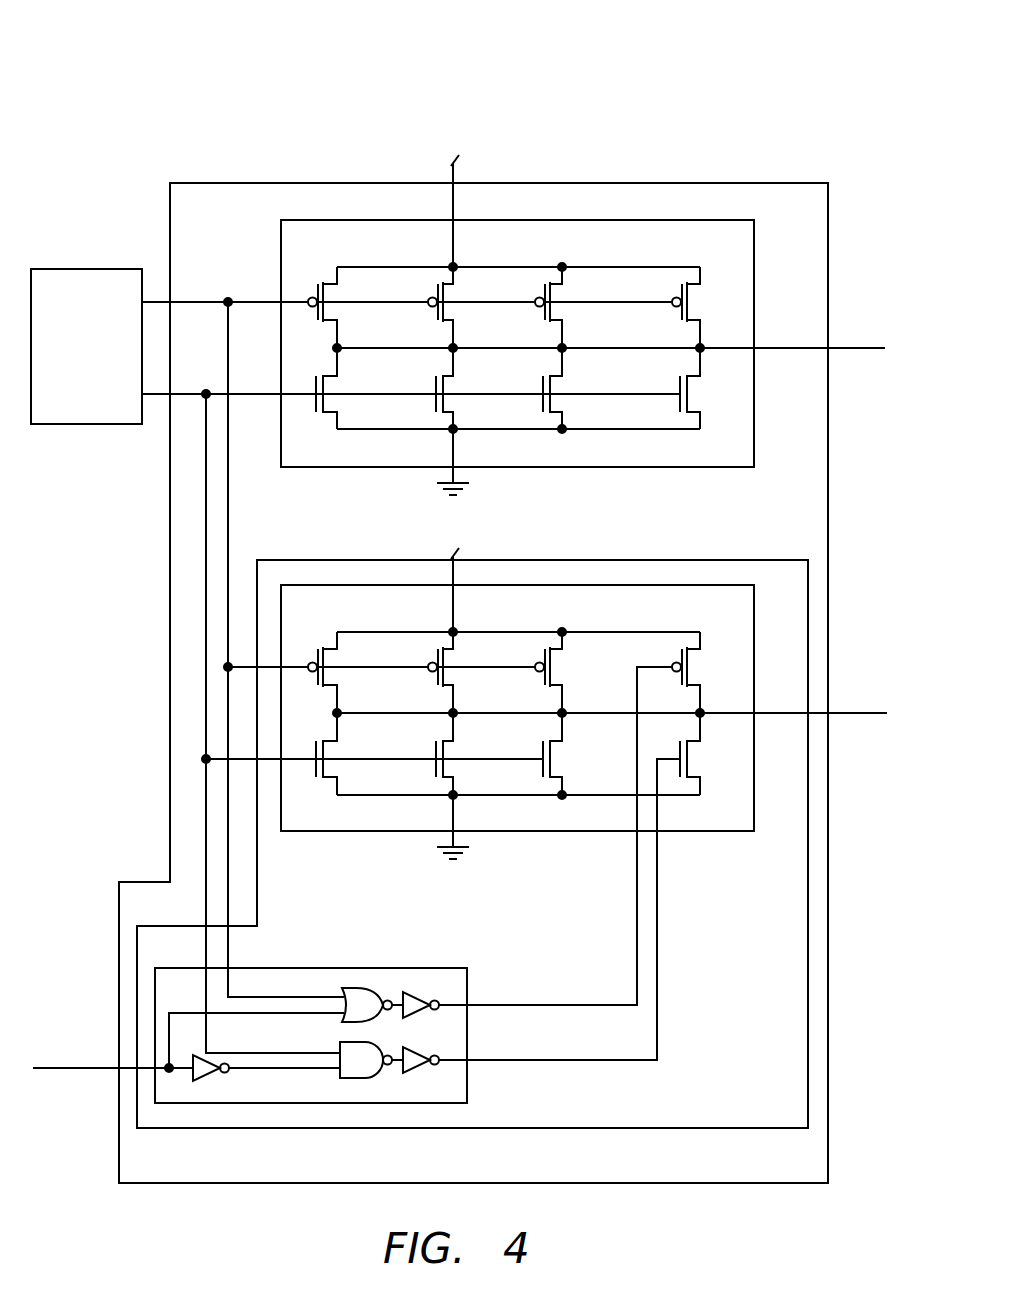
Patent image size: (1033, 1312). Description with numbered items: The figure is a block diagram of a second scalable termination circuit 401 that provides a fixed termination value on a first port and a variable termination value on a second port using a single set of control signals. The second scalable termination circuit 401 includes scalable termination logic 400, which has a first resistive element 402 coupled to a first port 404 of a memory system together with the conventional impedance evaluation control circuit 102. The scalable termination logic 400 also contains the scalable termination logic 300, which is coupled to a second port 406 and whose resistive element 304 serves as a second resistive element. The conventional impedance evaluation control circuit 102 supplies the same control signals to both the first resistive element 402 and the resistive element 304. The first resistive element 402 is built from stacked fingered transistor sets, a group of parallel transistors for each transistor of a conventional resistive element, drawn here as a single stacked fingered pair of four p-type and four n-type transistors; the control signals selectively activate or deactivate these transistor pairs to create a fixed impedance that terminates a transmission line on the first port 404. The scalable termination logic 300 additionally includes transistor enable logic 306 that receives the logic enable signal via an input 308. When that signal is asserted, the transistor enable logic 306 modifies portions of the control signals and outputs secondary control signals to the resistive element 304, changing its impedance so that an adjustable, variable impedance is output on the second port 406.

The second scalable termination circuit 401 is at (521, 58).
The scalable termination logic 400 is at (707, 172).
The conventional impedance evaluation control circuit 102 is at (45, 269).
The first resistive element 402 is at (687, 467).
The first port 404 is at (852, 348).
The scalable termination logic 300 is at (563, 551).
The resistive element 304 is at (687, 831).
The second port 406 is at (852, 713).
The transistor enable logic 306 is at (448, 969).
The input 308 is at (110, 1068).